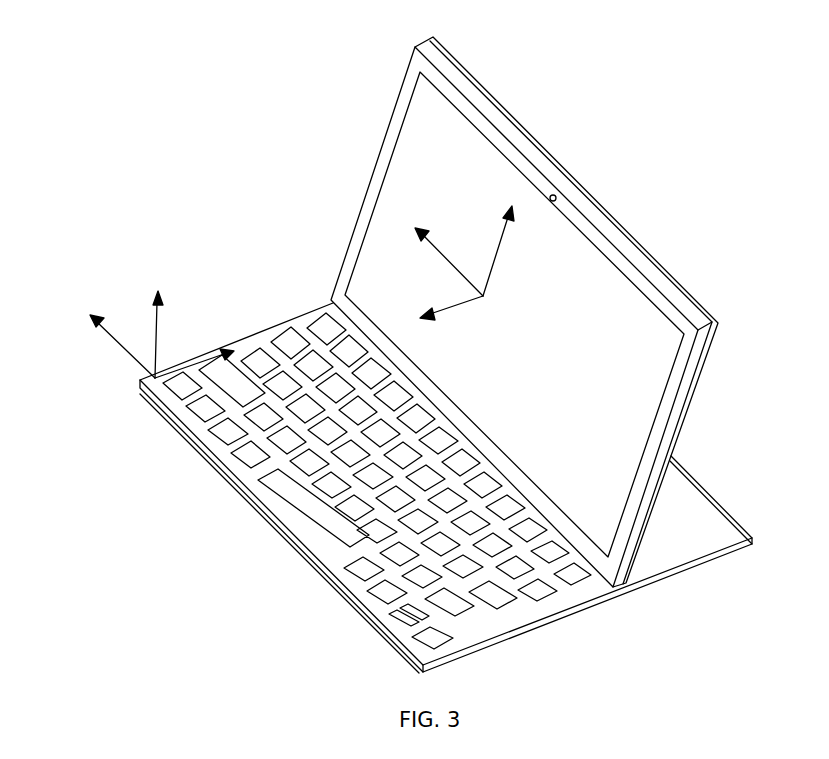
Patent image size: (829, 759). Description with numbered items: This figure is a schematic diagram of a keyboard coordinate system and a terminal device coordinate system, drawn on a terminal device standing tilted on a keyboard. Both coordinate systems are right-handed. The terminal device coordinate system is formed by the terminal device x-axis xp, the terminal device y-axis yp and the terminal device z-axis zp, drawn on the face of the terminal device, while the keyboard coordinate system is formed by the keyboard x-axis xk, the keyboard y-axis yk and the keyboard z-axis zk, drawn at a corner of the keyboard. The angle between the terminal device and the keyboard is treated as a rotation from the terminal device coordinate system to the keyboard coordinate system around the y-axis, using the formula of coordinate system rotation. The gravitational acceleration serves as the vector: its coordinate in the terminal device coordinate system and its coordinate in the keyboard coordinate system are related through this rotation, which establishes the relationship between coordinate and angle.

The keyboard coordinate system x-axis xk is at (197, 340).
The keyboard coordinate system y-axis yk is at (110, 341).
The keyboard coordinate system z-axis zk is at (143, 317).
The terminal device coordinate system x-axis xp is at (493, 234).
The terminal device coordinate system y-axis yp is at (432, 250).
The terminal device coordinate system z-axis zp is at (436, 297).